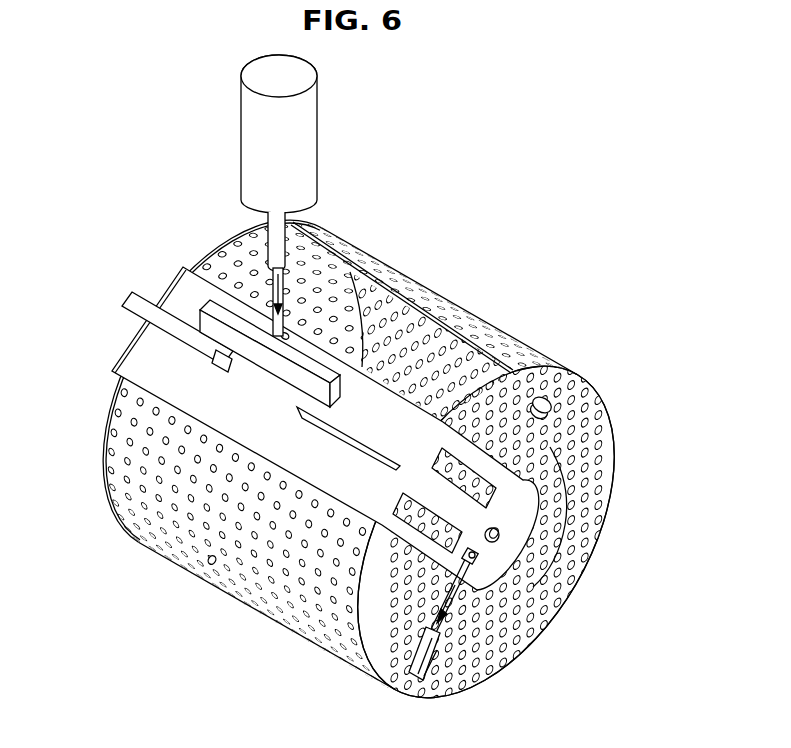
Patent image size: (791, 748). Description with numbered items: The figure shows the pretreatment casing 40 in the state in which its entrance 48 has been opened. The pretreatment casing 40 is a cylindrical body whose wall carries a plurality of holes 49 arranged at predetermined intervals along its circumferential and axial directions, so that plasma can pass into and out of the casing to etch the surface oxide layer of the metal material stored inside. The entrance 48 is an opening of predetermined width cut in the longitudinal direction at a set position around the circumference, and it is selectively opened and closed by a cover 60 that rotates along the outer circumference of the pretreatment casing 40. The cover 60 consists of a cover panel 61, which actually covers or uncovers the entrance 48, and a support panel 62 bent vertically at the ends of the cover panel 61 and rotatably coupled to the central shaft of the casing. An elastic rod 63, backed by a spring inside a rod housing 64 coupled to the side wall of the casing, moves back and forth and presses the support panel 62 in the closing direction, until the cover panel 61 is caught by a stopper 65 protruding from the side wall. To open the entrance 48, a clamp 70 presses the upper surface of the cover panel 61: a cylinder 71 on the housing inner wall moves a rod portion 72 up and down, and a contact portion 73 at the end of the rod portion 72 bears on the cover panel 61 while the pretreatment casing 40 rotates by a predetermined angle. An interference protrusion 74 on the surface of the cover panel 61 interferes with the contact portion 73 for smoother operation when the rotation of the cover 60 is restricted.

The pretreatment casing 40 is at (613, 472).
The entrance 48 is at (427, 290).
The holes 49 is at (210, 564).
The cover 60 is at (389, 504).
The cover panel 61 is at (127, 362).
The support panel 62 is at (517, 520).
The elastic rod 63 is at (470, 567).
The rod housing 64 is at (453, 593).
The stopper 65 is at (552, 405).
The clamp 70 is at (301, 195).
The cylinder 71 is at (308, 146).
The rod portion 72 is at (270, 276).
The contact portion 73 is at (283, 374).
The interference protrusion 74 is at (130, 299).